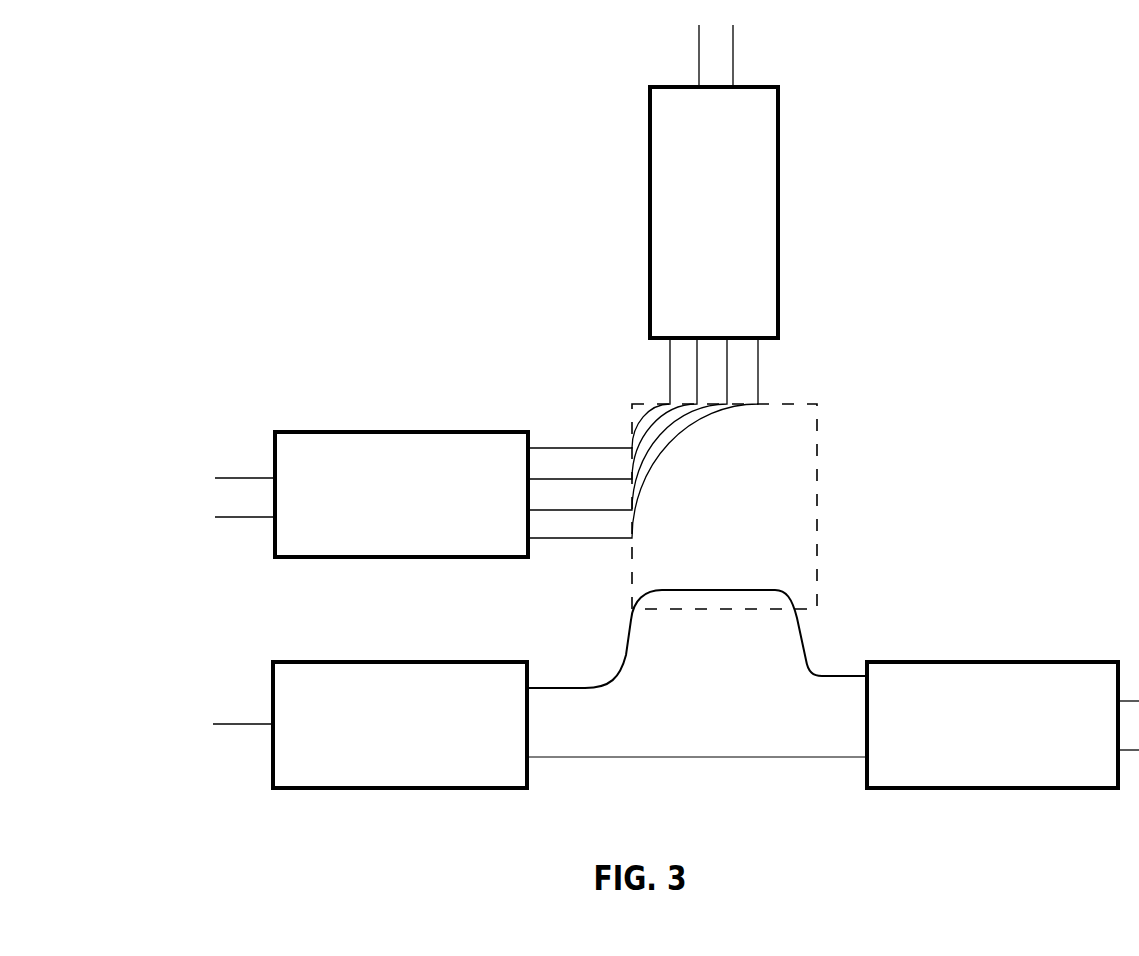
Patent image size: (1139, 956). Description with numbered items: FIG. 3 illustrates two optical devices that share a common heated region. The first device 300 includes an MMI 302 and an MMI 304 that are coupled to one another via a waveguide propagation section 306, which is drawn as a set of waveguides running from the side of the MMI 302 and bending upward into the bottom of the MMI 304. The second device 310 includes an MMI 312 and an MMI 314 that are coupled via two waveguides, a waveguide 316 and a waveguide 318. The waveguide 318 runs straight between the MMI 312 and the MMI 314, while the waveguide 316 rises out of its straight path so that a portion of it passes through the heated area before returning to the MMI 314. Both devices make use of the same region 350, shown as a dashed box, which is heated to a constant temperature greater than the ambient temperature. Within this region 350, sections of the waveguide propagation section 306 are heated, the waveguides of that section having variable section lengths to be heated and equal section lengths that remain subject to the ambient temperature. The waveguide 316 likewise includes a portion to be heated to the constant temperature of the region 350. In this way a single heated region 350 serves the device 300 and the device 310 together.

The device 300 is at (279, 140).
The MMI 302 is at (371, 494).
The MMI 304 is at (714, 181).
The waveguide propagation section 306 is at (562, 537).
The region 350 is at (815, 405).
The device 310 is at (837, 813).
The MMI 312 is at (370, 725).
The MMI 314 is at (1003, 725).
The waveguide 316 is at (697, 640).
The waveguide 318 is at (697, 743).